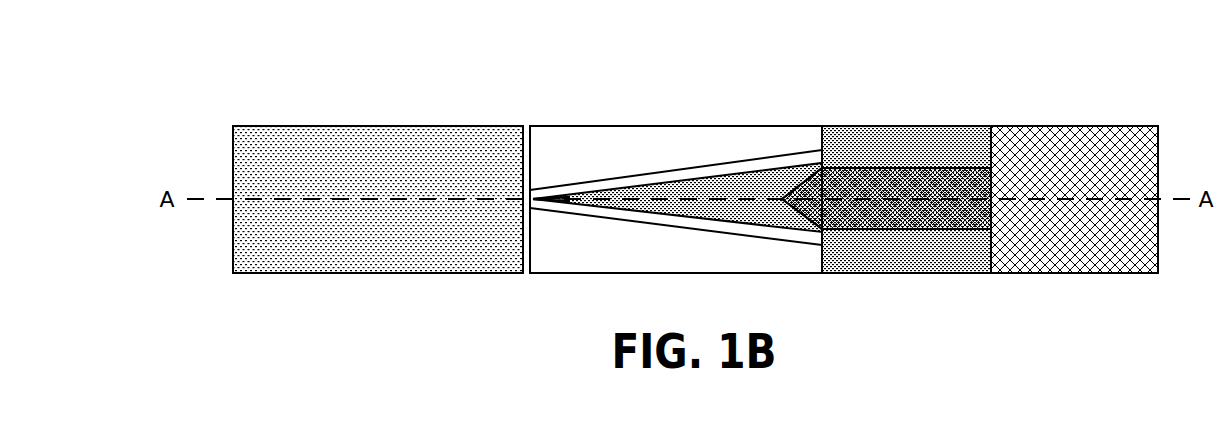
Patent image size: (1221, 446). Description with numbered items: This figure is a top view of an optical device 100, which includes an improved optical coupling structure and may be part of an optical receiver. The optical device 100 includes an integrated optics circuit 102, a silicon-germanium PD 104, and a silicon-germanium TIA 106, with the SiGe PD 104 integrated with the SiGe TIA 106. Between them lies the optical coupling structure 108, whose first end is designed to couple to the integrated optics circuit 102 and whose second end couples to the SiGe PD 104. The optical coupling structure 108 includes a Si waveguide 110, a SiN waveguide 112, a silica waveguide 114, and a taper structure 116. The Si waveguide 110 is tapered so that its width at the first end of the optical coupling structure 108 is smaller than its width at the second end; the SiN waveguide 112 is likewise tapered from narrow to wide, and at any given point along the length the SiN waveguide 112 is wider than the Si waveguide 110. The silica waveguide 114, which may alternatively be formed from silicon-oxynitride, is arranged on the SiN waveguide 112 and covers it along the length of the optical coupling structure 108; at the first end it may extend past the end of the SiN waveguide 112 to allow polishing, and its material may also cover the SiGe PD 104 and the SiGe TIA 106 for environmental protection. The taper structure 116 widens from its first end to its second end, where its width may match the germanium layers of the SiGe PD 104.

The optical device 100 is at (222, 70).
The integrated optics circuit 102 is at (378, 199).
The silicon-germanium PD 104 is at (886, 198).
The silicon-germanium TIA 106 is at (1074, 199).
The optical coupling structure 108 is at (825, 63).
The Si waveguide 110 is at (749, 190).
The SiN waveguide 112 is at (647, 178).
The silica waveguide 114 is at (676, 199).
The taper structure 116 is at (806, 186).